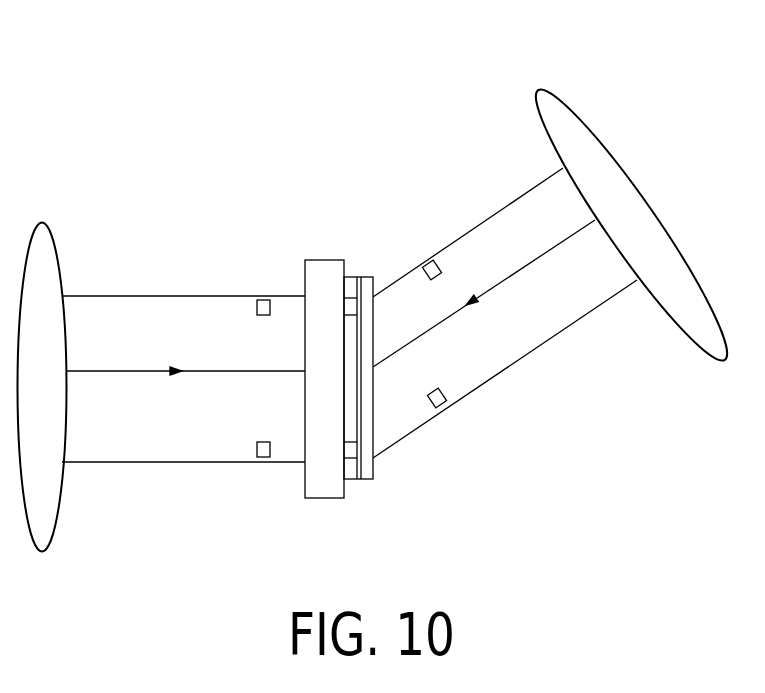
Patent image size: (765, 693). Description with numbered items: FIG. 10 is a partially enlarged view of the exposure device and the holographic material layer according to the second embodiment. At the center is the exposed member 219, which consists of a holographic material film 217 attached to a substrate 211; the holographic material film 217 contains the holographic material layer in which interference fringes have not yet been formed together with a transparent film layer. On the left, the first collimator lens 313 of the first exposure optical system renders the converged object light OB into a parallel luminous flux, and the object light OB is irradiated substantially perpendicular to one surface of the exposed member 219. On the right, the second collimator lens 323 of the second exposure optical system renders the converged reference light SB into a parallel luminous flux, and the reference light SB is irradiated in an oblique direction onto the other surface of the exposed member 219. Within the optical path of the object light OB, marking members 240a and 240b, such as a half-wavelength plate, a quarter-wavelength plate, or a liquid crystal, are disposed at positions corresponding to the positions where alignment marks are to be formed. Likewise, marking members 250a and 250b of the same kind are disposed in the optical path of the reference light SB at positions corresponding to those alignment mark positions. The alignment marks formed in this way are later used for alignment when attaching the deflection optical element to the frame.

The first collimator lens 313 is at (43, 222).
The second collimator lens 323 is at (570, 105).
The substrate 211 is at (318, 260).
The holographic material film 217 is at (373, 268).
The exposed member 219 is at (361, 206).
The marking member 240a is at (263, 300).
The marking member 240b is at (263, 457).
The marking member 250a is at (432, 262).
The marking member 250b is at (440, 405).
The object light OB is at (128, 296).
The reference light SB is at (545, 343).